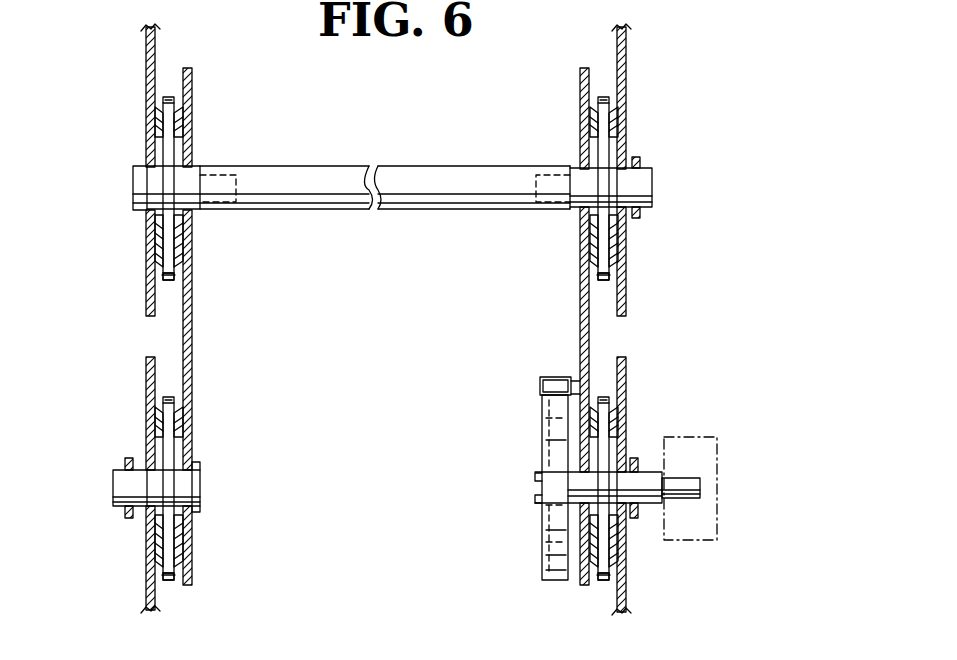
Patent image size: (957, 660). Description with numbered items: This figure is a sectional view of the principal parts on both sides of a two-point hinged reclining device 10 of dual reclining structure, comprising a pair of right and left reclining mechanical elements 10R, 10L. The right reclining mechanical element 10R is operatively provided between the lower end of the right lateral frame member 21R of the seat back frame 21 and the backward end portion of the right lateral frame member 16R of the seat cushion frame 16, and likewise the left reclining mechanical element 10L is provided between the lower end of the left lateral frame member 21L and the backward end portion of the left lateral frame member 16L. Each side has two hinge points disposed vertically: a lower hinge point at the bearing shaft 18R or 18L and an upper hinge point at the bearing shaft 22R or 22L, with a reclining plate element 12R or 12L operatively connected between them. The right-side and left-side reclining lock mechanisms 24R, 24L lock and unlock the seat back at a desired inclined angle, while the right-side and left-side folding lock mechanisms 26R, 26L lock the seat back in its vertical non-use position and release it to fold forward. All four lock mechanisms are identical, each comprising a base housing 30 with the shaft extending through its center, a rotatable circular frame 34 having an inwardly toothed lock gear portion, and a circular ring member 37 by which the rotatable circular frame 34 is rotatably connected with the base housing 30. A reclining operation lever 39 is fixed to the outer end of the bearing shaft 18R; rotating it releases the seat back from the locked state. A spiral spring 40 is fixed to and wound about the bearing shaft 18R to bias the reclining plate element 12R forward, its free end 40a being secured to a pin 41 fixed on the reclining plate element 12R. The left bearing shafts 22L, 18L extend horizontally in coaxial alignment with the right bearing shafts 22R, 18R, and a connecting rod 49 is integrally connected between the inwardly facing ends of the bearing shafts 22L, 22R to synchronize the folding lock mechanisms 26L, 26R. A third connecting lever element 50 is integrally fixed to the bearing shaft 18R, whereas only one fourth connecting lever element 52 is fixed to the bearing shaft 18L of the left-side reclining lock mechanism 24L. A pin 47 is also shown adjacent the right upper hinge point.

The reclining device 10 is at (700, 75).
The left reclining mechanical element 10L is at (108, 252).
The right reclining mechanical element 10R is at (736, 217).
The reclining plate element 12L is at (194, 345).
The reclining plate element 12R is at (578, 330).
The seat cushion frame 16 is at (135, 393).
The left lateral frame member 16L is at (143, 558).
The right lateral frame member 16R is at (622, 590).
The bearing shaft 18L is at (118, 488).
The bearing shaft 18R is at (650, 500).
The seat back frame 21 is at (130, 46).
The left lateral frame member 21L is at (146, 283).
The right lateral frame member 21R is at (626, 292).
The bearing shaft 22L is at (135, 178).
The bearing shaft 22R is at (655, 185).
The left-side reclining lock mechanism 24L is at (167, 585).
The right-side reclining lock mechanism 24R is at (603, 585).
The left-side folding lock mechanism 26L is at (168, 92).
The right-side folding lock mechanism 26R is at (603, 92).
The base housing 30 is at (192, 235).
The rotatable circular frame 34 is at (158, 240).
The circular ring member 37 is at (176, 283).
The reclining operation lever 39 is at (717, 505).
The spiral spring 40 is at (545, 537).
The free end 40a is at (545, 378).
The pin 41 is at (540, 386).
The positioning pin 47 is at (640, 160).
The connecting rod 49 is at (502, 175).
The third connecting lever element 50 is at (637, 456).
The fourth connecting lever element 52 is at (128, 456).